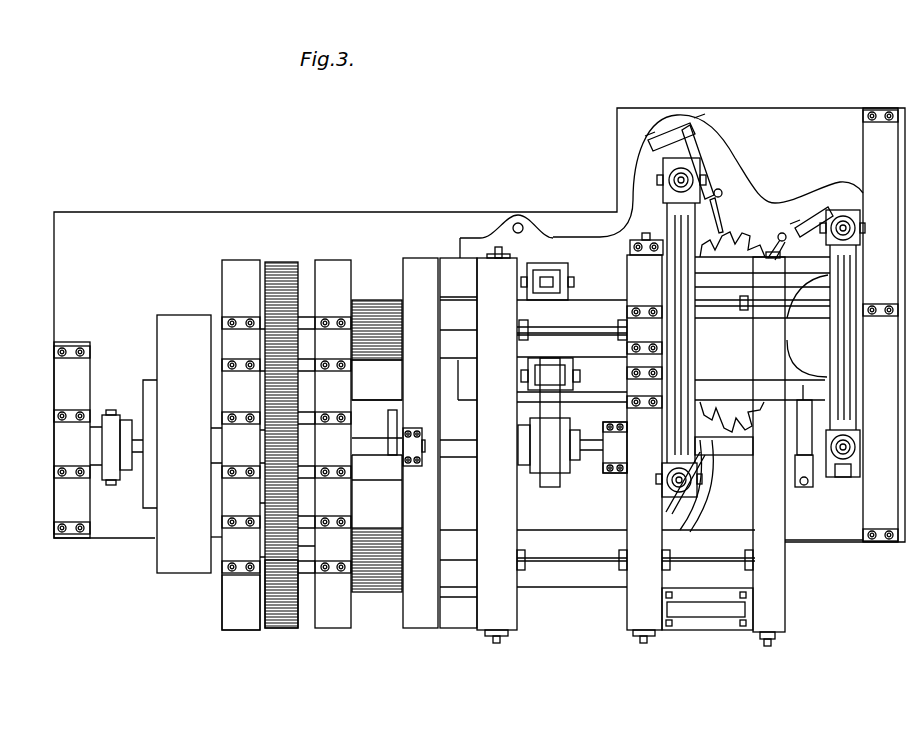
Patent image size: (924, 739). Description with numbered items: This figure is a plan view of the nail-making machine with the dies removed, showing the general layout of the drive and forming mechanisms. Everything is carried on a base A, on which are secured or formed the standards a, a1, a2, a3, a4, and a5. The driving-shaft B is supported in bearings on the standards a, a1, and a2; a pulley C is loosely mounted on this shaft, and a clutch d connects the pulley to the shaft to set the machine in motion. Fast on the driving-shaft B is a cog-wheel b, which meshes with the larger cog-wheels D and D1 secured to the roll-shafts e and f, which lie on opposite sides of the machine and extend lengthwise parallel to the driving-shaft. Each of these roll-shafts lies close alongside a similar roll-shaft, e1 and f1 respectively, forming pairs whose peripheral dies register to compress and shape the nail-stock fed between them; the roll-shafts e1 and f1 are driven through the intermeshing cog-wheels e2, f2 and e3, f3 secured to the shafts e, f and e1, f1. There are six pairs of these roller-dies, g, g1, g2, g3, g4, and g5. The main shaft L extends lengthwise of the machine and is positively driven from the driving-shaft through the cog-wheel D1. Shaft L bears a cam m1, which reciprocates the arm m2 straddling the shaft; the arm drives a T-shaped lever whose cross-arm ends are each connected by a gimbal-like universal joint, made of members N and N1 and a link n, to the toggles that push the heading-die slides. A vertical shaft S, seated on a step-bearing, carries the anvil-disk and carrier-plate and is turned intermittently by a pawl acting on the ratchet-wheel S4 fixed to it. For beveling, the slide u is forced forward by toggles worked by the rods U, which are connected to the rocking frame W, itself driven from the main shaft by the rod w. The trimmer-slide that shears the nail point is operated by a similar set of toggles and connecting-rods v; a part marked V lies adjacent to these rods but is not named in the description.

The base A is at (479, 325).
The standard a is at (56, 385).
The standard a1 is at (232, 598).
The standard a2 is at (345, 414).
The standard a3 is at (404, 478).
The standard a4 is at (628, 486).
The standard a5 is at (880, 325).
The driving-shaft B is at (218, 443).
The cog-wheel b is at (266, 443).
The pulley C is at (177, 444).
The clutch d is at (112, 418).
The cog-wheel D is at (284, 262).
The cog-wheel D1 is at (270, 582).
The roll-shaft e is at (476, 545).
The roll-shaft e1 is at (462, 578).
The cog-wheel e2 is at (377, 571).
The cog-wheel e3 is at (377, 492).
The roll-shaft f is at (304, 338).
The roll-shaft f1 is at (464, 325).
The cog-wheel f2 is at (377, 380).
The cog-wheel f3 is at (378, 300).
The roller-dies g is at (572, 558).
The roller-dies g1 is at (572, 322).
The roller-dies g2 is at (613, 553).
The roller-dies g3 is at (615, 322).
The roller-dies g4 is at (708, 550).
The roller-dies g5 is at (762, 310).
The main shaft L is at (378, 444).
The cam m1 is at (575, 430).
The arm m2 is at (548, 487).
The link n is at (548, 278).
The universal-joint member N is at (586, 368).
The universal-joint member N1 is at (535, 377).
The vertical shaft S is at (756, 436).
The ratchet-wheel S4 is at (760, 404).
The rods U is at (664, 486).
The slide u is at (693, 323).
The lever V is at (799, 231).
The connecting-rods v is at (872, 446).
The rocking frame W is at (852, 300).
The rod w is at (801, 427).